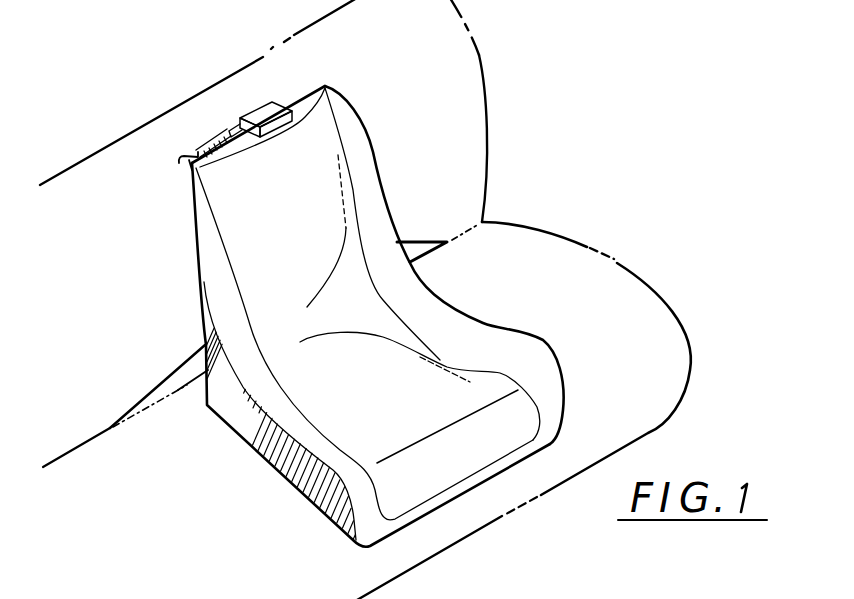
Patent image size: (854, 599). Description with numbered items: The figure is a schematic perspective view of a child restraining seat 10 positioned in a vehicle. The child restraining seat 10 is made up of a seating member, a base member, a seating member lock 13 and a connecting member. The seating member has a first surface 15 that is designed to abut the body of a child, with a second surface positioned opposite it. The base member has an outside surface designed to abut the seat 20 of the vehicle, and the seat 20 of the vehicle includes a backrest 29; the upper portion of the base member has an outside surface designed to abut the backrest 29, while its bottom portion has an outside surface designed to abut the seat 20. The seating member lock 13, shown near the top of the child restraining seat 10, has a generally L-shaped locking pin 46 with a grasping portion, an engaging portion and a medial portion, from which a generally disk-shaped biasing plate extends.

The child restraining seat 10 is at (396, 137).
The seating member lock 13 is at (235, 105).
The first surface 15 is at (353, 293).
The seat 20 is at (549, 225).
The backrest 29 is at (467, 143).
The locking pin 46 is at (182, 153).